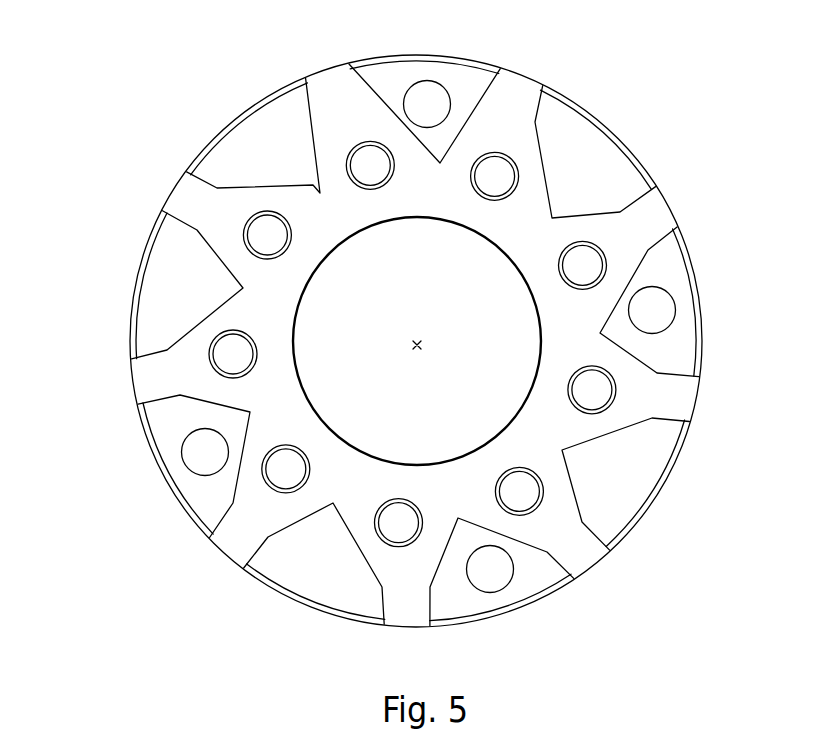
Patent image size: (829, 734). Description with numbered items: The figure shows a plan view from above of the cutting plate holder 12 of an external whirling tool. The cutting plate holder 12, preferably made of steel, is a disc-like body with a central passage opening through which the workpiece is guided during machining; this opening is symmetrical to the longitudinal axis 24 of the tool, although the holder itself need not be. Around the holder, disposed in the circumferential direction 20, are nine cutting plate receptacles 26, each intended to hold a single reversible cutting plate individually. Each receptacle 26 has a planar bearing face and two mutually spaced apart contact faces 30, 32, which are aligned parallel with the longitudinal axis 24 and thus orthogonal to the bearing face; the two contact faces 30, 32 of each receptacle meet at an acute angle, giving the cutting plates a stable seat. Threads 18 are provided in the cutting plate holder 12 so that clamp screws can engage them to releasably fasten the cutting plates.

The cutting plate holder 12 is at (113, 155).
The threads 18 is at (360, 149).
The circumferential direction 20 is at (730, 352).
The longitudinal axis 24 is at (420, 345).
The cutting plate receptacles 26 is at (158, 386).
The contact face 30 is at (321, 150).
The contact face 32 is at (389, 131).